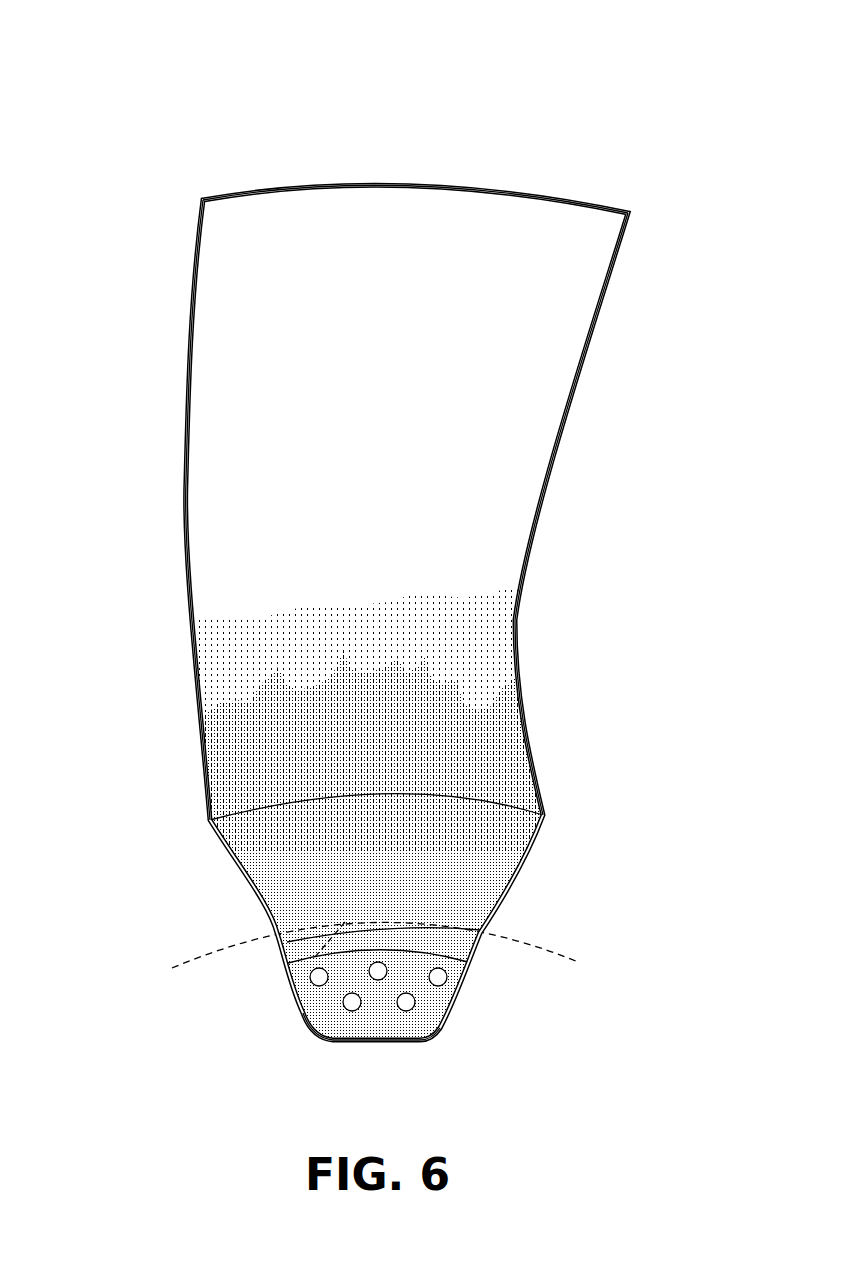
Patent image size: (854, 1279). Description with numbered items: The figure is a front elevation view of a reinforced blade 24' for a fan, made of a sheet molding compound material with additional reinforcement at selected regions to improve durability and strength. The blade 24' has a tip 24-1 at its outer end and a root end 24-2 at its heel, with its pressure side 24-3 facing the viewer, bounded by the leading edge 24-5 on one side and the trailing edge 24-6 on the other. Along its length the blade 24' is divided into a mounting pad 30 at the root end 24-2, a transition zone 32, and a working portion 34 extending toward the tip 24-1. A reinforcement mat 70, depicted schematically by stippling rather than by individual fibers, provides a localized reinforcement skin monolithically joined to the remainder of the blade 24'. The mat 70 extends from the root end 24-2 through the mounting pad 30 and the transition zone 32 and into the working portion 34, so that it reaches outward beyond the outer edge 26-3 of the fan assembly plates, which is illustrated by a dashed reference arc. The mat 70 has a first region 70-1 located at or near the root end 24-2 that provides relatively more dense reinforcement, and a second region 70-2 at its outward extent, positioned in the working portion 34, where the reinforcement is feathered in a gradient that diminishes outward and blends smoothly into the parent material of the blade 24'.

The reinforced blade 24' is at (389, 551).
The tip 24-1 is at (363, 183).
The root end 24-2 is at (338, 1043).
The pressure side 24-3 is at (248, 326).
The leading edge 24-5 is at (186, 490).
The trailing edge 24-6 is at (522, 535).
The outer edge 26-3 is at (292, 987).
The mounting pad 30 is at (503, 945).
The transition zone 32 is at (575, 813).
The working portion 34 is at (632, 213).
The reinforcement mat 70 is at (323, 876).
The first region 70-1 is at (161, 742).
The second region 70-2 is at (161, 617).